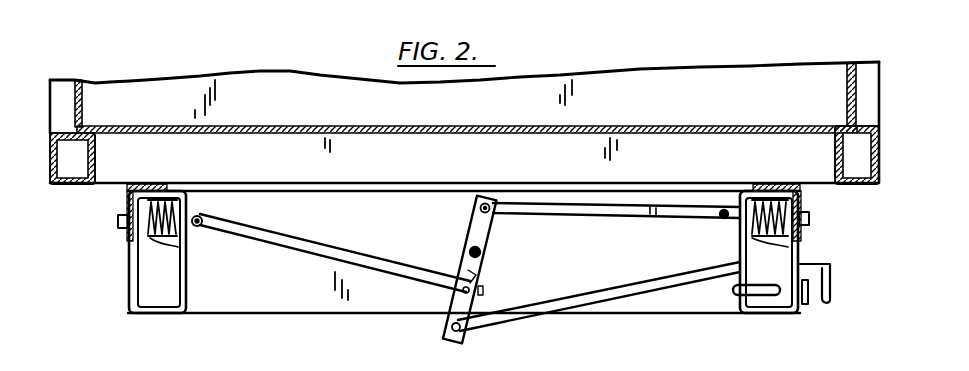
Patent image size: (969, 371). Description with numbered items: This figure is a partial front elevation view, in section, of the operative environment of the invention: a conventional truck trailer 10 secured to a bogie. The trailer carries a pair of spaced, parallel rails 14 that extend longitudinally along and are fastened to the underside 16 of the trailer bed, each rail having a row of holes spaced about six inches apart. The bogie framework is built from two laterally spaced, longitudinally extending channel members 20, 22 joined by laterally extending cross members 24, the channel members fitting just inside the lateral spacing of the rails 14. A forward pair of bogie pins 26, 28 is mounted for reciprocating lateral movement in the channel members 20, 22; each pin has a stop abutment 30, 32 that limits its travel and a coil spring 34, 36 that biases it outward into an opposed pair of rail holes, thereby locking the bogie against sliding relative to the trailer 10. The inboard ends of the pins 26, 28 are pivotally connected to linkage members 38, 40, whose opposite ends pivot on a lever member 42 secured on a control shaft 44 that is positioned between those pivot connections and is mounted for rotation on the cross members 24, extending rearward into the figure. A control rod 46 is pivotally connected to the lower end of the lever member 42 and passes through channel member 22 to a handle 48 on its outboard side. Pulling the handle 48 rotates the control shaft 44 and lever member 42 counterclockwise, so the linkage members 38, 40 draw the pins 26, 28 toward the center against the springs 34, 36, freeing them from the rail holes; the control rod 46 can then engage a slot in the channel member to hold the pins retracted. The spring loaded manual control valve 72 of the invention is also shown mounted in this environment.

The truck trailer 10 is at (265, 80).
The rails 14 is at (127, 240).
The underside of the trailer bed 16 is at (102, 186).
The channel member 20 is at (147, 314).
The channel member 22 is at (747, 314).
The cross members 24 is at (283, 313).
The bogie pin 26 is at (118, 222).
The bogie pin 28 is at (809, 219).
The stop abutment 30 is at (148, 240).
The stop abutment 32 is at (790, 246).
The coil spring 34 is at (178, 247).
The coil spring 36 is at (752, 238).
The linkage member 38 is at (284, 246).
The linkage member 40 is at (588, 214).
The lever member 42 is at (475, 226).
The control shaft 44 is at (485, 251).
The control rod 46 is at (556, 312).
The handle 48 is at (830, 297).
The spring loaded manual control valve 72 is at (773, 296).